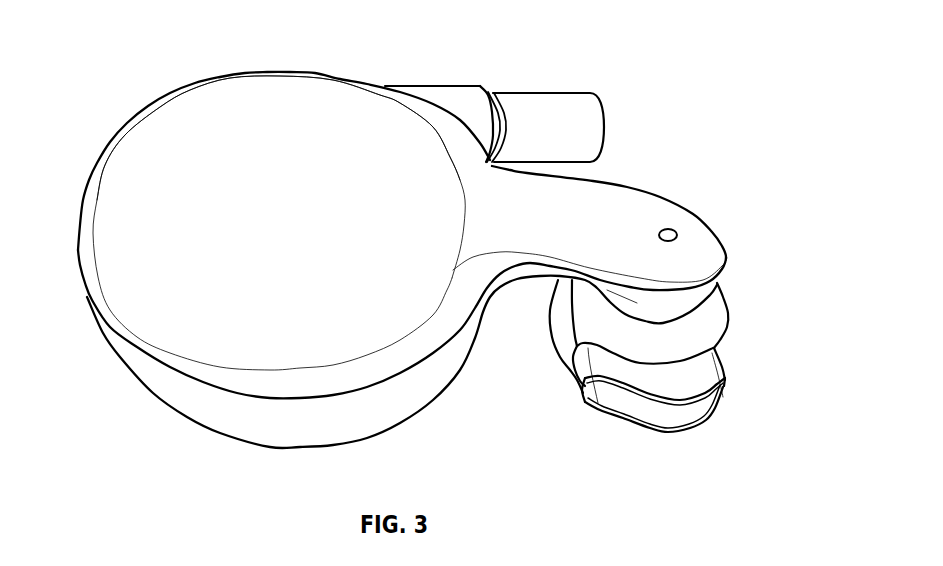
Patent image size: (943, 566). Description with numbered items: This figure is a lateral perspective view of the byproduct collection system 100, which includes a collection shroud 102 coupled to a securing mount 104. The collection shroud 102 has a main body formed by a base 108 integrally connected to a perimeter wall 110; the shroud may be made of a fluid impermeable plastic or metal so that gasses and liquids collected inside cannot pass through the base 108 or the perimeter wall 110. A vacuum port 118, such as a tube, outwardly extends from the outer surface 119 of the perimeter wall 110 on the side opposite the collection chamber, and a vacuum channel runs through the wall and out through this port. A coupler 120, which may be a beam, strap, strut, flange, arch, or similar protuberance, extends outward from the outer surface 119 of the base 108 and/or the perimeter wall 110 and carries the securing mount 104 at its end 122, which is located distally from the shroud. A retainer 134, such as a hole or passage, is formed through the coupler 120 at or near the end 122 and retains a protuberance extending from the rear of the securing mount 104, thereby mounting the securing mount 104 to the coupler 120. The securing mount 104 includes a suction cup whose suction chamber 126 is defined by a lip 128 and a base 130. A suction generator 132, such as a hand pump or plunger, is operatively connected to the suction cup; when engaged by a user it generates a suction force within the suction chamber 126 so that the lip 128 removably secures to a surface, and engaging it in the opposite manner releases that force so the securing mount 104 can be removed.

The byproduct collection system 100 is at (145, 63).
The collection shroud 102 is at (278, 62).
The securing mount 104 is at (740, 312).
The base 108 is at (320, 167).
The perimeter wall 110 is at (298, 420).
The vacuum port 118 is at (548, 107).
The outer surface 119 is at (233, 148).
The coupler 120 is at (592, 203).
The end 122 is at (653, 203).
The suction chamber 126 is at (722, 332).
The lip 128 is at (717, 298).
The base 130 is at (710, 297).
The suction generator 132 is at (723, 378).
The retainer 134 is at (668, 229).